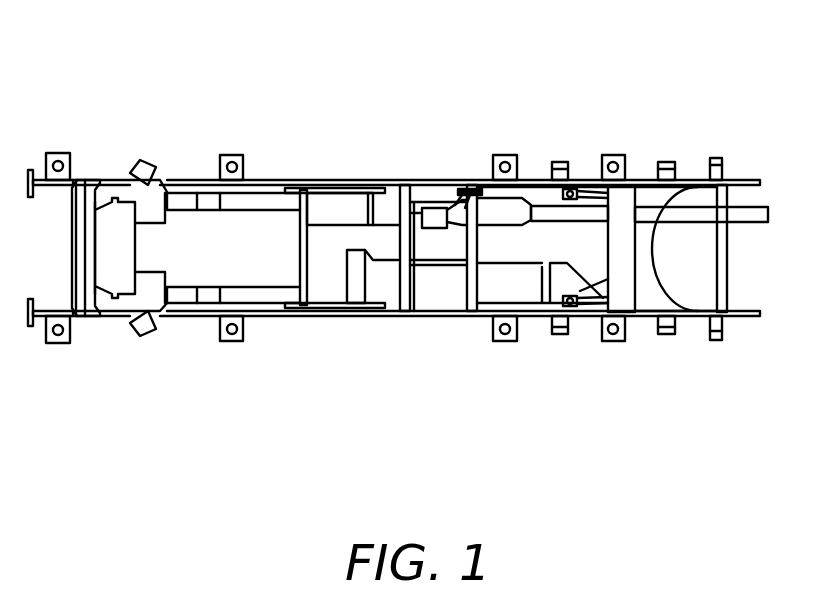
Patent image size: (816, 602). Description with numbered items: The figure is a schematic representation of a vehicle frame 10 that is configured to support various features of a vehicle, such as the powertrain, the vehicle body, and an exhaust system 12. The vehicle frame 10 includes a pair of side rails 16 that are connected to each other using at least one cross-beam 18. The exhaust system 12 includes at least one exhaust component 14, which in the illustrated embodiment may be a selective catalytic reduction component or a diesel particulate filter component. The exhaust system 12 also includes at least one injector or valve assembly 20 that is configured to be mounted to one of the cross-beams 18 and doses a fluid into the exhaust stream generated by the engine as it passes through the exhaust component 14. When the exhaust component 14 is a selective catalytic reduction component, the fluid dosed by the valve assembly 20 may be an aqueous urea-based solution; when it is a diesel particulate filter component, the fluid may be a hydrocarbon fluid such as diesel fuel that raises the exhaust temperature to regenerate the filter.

The vehicle frame 10 is at (150, 118).
The exhaust system 12 is at (420, 234).
The exhaust component 14 is at (503, 210).
The side rails 16 is at (243, 192).
The cross-beam 18 is at (400, 247).
The injector or valve assembly 20 is at (378, 200).